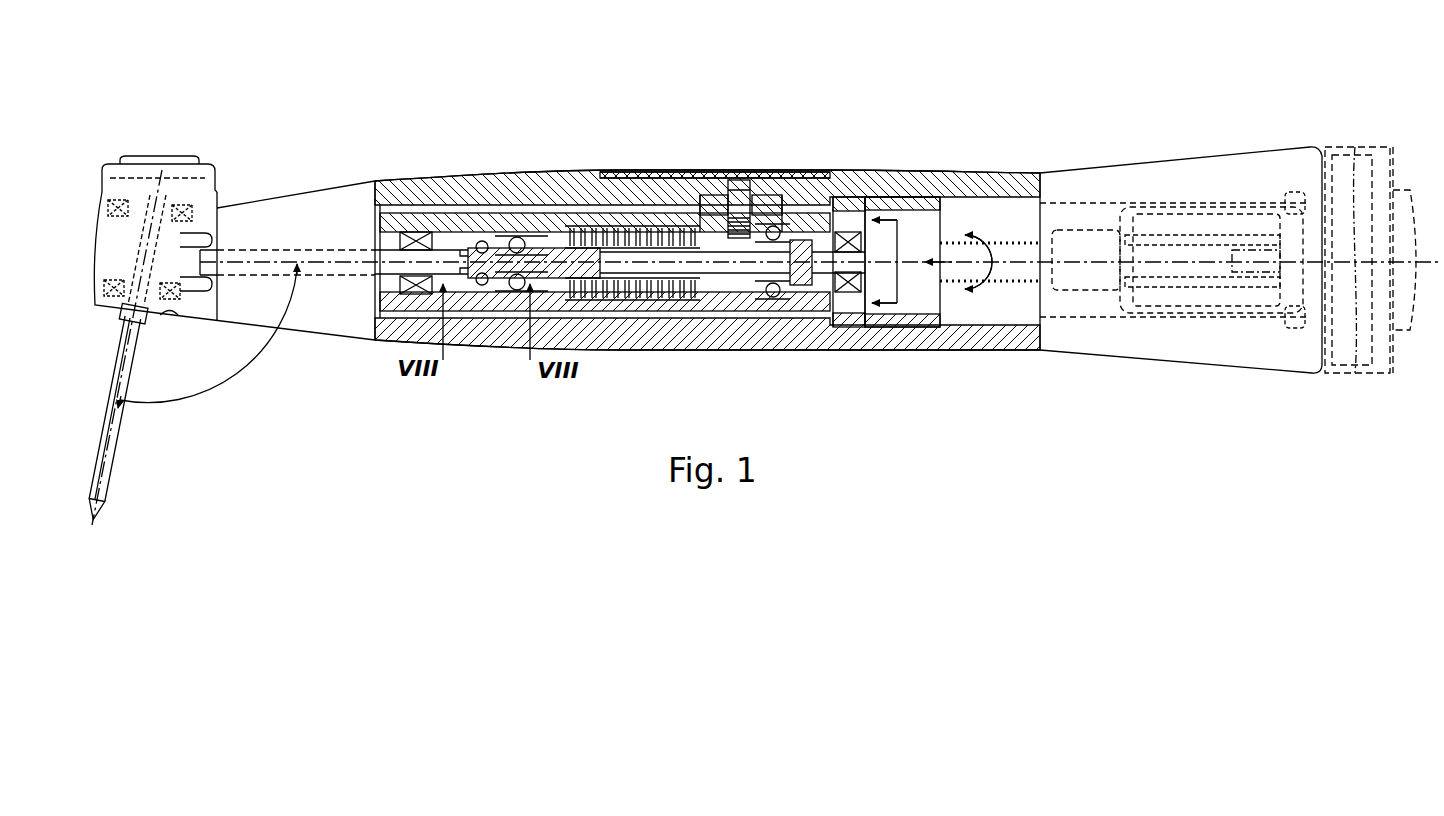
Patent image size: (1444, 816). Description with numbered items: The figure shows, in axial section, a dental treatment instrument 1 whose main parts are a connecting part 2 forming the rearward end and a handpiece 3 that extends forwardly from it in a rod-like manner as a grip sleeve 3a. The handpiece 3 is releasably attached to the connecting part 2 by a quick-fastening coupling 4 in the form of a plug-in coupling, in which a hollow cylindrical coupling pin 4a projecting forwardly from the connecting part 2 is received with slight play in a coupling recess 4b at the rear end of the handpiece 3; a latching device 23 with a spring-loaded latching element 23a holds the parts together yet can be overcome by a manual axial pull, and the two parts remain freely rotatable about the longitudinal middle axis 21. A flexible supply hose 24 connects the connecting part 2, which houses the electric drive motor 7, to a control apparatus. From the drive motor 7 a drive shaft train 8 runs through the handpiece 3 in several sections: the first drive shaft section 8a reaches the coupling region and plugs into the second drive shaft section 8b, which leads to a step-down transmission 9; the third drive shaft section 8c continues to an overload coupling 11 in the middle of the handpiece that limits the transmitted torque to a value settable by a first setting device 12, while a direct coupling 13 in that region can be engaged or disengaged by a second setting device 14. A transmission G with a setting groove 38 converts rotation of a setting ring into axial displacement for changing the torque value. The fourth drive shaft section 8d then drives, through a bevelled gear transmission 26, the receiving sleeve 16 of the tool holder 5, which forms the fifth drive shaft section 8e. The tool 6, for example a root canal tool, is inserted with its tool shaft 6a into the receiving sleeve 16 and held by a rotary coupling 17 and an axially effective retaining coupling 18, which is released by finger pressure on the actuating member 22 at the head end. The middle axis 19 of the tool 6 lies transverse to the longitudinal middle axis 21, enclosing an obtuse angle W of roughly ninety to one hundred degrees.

The treatment instrument 1 is at (1190, 138).
The connecting part 2 is at (1355, 125).
The handpiece 3 is at (1103, 155).
The grip sleeve 3a is at (550, 178).
The quick-fastening coupling 4 is at (1218, 321).
The coupling pin 4a is at (1178, 315).
The coupling recess 4b is at (1150, 313).
The tool holder 5 is at (167, 324).
The tool 6 is at (121, 440).
The tool shaft 6a is at (150, 321).
The drive motor 7 is at (1340, 364).
The drive shaft train 8 is at (1020, 284).
The first drive shaft section 8a is at (1280, 232).
The second drive shaft section 8b is at (982, 276).
The third drive shaft section 8c is at (655, 272).
The fourth drive shaft section 8d is at (318, 272).
The fifth drive shaft section 8e is at (181, 276).
The step-down transmission 9 is at (915, 306).
The overload coupling 11 is at (487, 213).
The first setting device 12 is at (738, 178).
The direct coupling 13 is at (450, 248).
The second setting device 14 is at (851, 205).
The receiving sleeve 16 is at (118, 309).
The rotary coupling 17 is at (173, 195).
The retaining coupling 18 is at (140, 183).
The middle axis 19 is at (105, 491).
The longitudinal middle axis 21 is at (333, 262).
The actuating member 22 is at (158, 180).
The latching device 23 is at (1295, 336).
The latching element 23a is at (1290, 320).
The supply hose 24 is at (1410, 195).
The bevelled gear transmission 26 is at (204, 239).
The setting groove 38 is at (720, 200).
The transmission G is at (720, 205).
The angle W is at (207, 336).